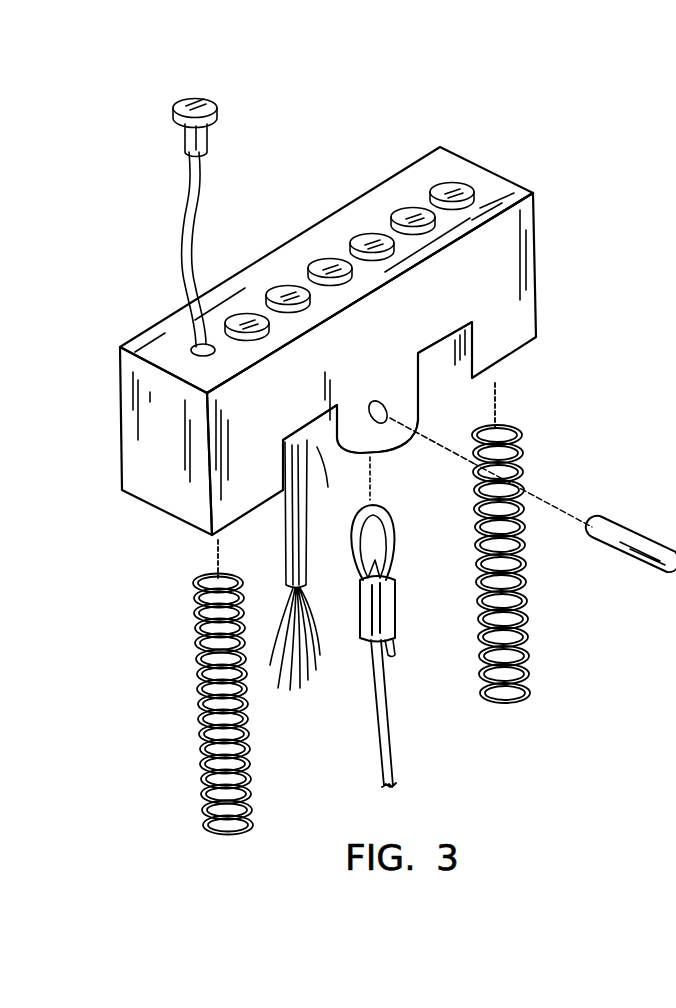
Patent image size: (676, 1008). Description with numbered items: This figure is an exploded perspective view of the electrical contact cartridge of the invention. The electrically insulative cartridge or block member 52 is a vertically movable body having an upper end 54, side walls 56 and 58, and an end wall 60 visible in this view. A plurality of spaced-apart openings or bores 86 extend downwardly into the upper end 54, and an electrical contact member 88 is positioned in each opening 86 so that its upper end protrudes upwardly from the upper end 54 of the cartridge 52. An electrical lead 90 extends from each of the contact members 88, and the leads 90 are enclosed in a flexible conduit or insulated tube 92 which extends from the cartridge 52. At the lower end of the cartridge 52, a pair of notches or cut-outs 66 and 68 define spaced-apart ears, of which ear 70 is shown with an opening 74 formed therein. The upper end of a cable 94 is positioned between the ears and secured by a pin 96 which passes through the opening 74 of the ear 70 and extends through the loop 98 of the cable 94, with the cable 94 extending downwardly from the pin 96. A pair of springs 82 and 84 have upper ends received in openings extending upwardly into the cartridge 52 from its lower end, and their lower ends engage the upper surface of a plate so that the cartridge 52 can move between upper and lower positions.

The cartridge 52 is at (540, 185).
The upper end 54 is at (356, 226).
The side wall 56 is at (390, 345).
The side wall 58 is at (360, 193).
The end wall 60 is at (170, 445).
The notch 66 is at (317, 514).
The notch 68 is at (440, 378).
The ear 70 is at (403, 400).
The opening 74 is at (385, 420).
The spring 82 is at (196, 672).
The spring 84 is at (527, 643).
The opening 86 is at (196, 346).
The electrical contact member 88 is at (207, 124).
The electrical lead 90 is at (188, 213).
The flexible conduit 92 is at (300, 503).
The cable 94 is at (400, 734).
The pin 96 is at (620, 528).
The loop 98 is at (400, 530).